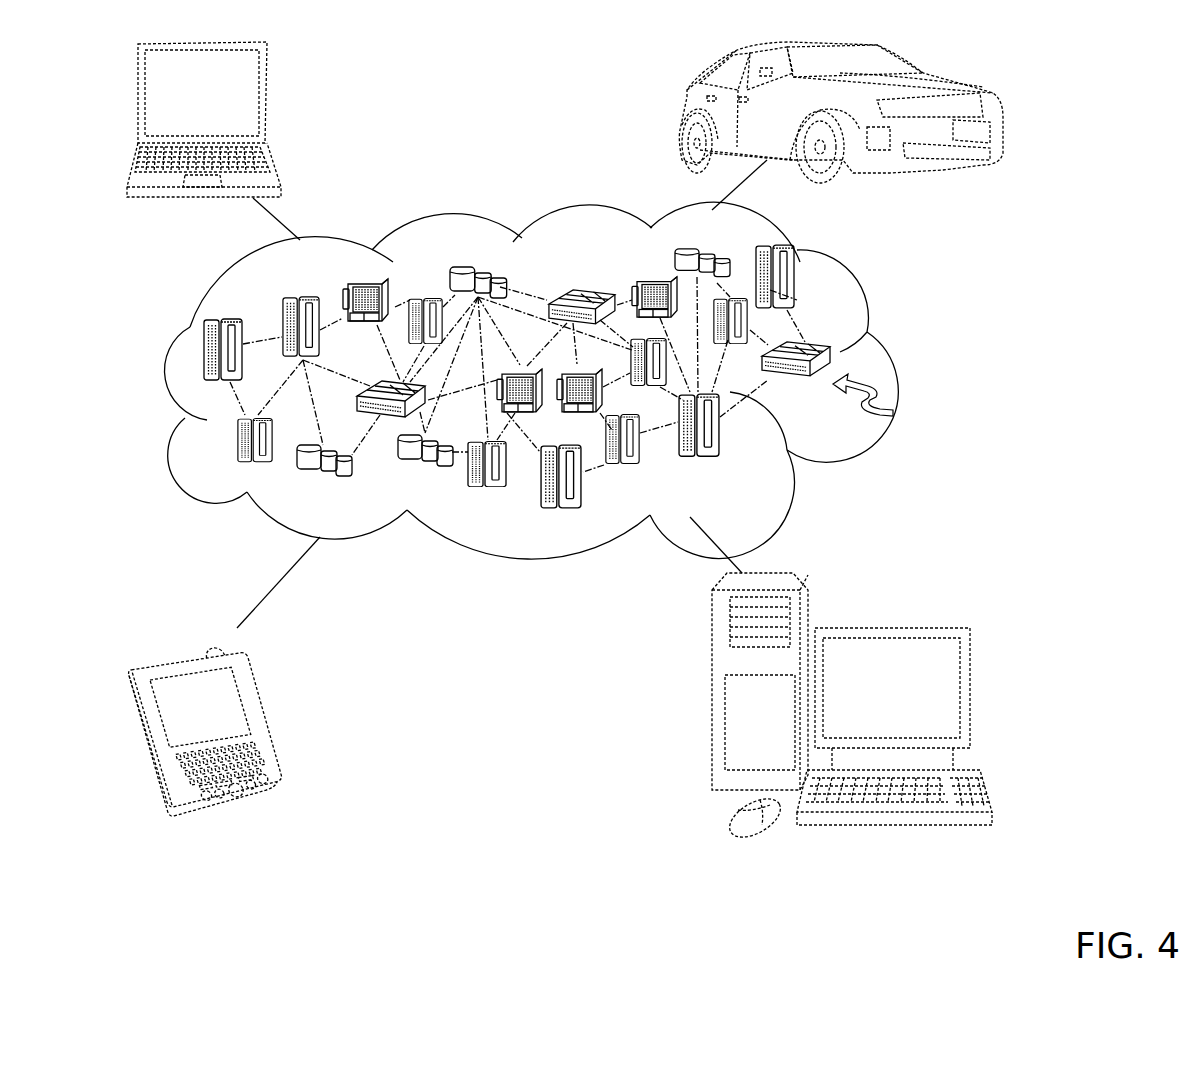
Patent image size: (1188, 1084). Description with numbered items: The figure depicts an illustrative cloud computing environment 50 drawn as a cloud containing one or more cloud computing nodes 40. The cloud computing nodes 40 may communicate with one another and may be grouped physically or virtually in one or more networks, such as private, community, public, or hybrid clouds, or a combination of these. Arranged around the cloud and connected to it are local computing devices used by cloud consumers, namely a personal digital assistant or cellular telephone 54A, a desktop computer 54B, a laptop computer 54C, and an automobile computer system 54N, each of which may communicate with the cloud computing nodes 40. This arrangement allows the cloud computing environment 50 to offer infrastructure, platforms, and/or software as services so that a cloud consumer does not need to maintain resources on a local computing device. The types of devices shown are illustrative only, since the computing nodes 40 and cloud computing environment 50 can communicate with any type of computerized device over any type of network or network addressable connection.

The cloud computing environment 50 is at (890, 357).
The cloud computing nodes 40 is at (881, 401).
The personal digital assistant (PDA) or cellular telephone 54A is at (253, 719).
The desktop computer 54B is at (889, 628).
The laptop computer 54C is at (268, 100).
The automobile computer system 54N is at (684, 112).